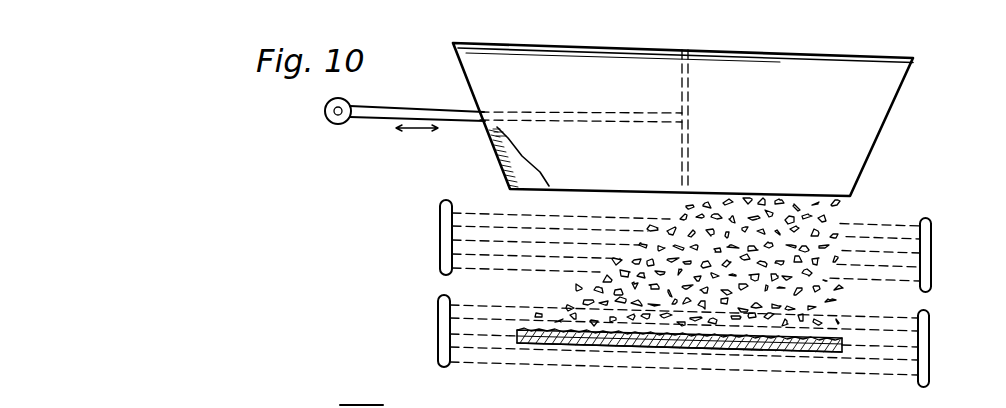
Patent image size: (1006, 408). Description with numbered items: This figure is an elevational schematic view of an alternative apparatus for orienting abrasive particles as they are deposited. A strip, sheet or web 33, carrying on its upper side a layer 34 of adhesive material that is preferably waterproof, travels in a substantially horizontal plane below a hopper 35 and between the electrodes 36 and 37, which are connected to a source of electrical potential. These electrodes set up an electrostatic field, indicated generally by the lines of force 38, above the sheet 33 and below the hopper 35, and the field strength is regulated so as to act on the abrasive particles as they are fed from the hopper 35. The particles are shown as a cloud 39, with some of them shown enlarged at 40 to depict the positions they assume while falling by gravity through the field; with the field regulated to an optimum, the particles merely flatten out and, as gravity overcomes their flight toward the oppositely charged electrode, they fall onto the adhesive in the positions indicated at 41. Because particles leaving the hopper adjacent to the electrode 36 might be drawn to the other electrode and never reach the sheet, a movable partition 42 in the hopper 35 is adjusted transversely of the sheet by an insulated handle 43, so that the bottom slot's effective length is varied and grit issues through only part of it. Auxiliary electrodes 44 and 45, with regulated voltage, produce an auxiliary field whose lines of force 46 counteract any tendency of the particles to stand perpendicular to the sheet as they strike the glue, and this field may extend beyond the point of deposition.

The sheet 33 is at (653, 351).
The layer of adhesive material 34 is at (832, 336).
The hopper 35 is at (883, 128).
The electrode 36 is at (440, 215).
The electrode 37 is at (932, 237).
The lines of force 38 is at (880, 240).
The cloud of abrasive particles 39 is at (716, 197).
The enlarged abrasive particles 40 is at (800, 200).
The deposited particles 41 is at (712, 351).
The movable partition 42 is at (682, 90).
The handle 43 is at (402, 107).
The auxiliary electrode 44 is at (446, 353).
The auxiliary electrode 45 is at (920, 377).
The lines of force of auxiliary field 46 is at (590, 367).